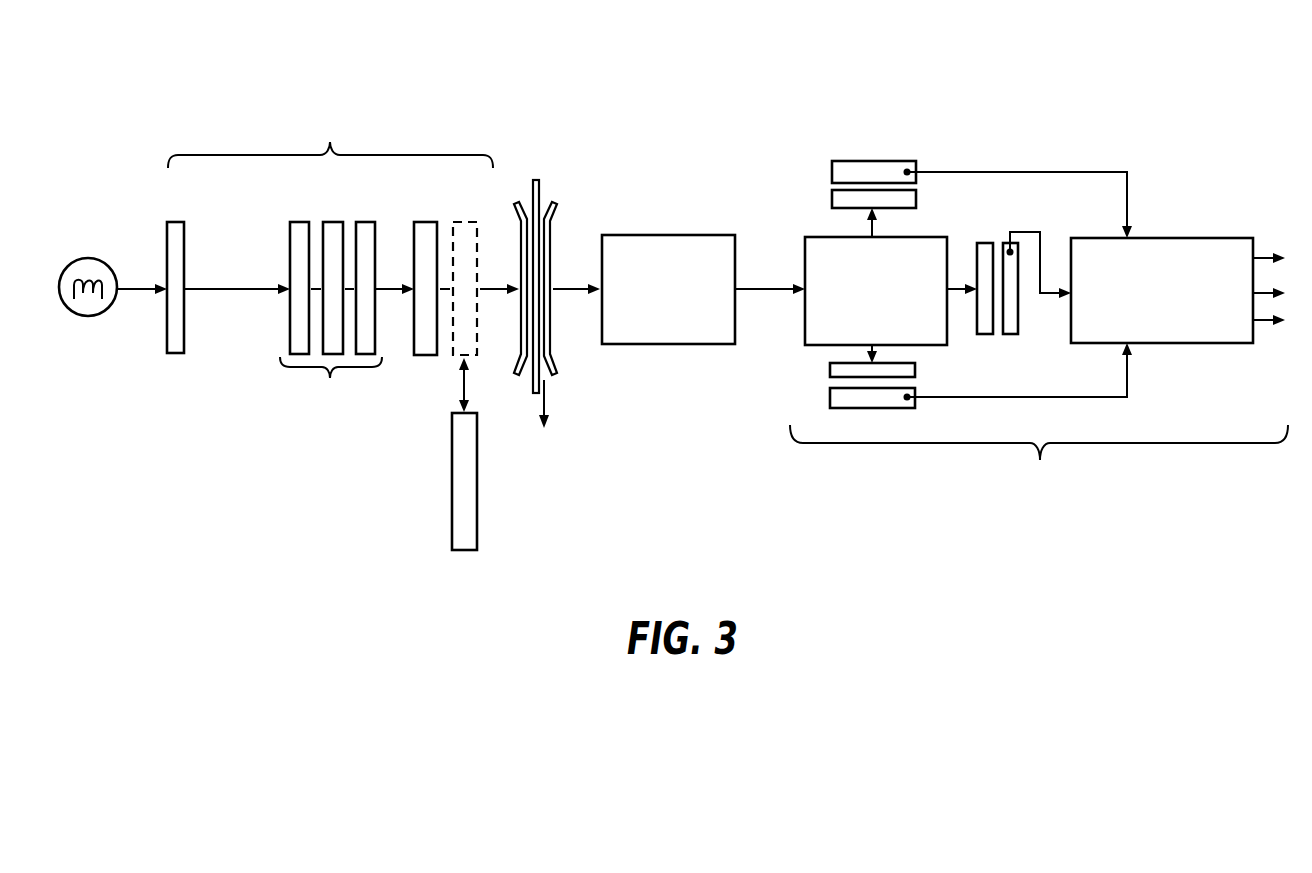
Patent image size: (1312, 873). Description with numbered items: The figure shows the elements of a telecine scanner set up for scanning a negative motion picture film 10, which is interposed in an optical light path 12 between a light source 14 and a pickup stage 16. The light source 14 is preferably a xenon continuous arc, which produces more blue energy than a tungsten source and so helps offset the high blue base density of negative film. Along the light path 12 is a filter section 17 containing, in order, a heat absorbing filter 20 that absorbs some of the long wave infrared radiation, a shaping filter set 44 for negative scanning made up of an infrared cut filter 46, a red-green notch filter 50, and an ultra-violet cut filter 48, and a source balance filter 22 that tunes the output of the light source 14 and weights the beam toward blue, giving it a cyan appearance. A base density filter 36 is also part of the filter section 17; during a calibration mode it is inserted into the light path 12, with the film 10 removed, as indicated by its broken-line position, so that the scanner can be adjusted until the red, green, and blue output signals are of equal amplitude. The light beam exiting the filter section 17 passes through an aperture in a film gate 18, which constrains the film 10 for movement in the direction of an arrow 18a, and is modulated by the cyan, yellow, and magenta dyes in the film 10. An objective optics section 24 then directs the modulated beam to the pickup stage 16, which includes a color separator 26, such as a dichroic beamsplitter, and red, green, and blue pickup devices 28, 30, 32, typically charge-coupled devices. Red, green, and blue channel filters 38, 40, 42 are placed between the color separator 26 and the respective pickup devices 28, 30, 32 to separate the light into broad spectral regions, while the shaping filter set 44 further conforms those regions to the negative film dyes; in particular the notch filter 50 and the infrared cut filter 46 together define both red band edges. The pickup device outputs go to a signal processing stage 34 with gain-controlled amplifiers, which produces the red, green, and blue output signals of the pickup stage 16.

The motion picture film 10 is at (540, 186).
The optical light path 12 is at (228, 287).
The light source 14 is at (88, 316).
The pickup stage 16 is at (1040, 460).
The filter section 17 is at (330, 140).
The film gate 18 is at (553, 348).
The arrow 18a is at (556, 398).
The heat absorbing filter 20 is at (175, 355).
The source balance filter 22 is at (425, 222).
The objective optics section 24 is at (657, 235).
The color separator 26 is at (918, 237).
The red pickup device 28 is at (855, 161).
The green pickup device 30 is at (1019, 322).
The blue pickup device 32 is at (880, 408).
The signal processing stage 34 is at (1175, 238).
The base density (D-min) filter 36 is at (478, 470).
The red channel filter 38 is at (832, 200).
The green channel filter 40 is at (986, 243).
The blue channel filter 42 is at (916, 370).
The shaping filter set 44 is at (330, 378).
The infrared (IR) cut filter 46 is at (297, 222).
The ultra-violet (UV) cut filter 48 is at (365, 222).
The red-green (RG) notch filter 50 is at (332, 222).